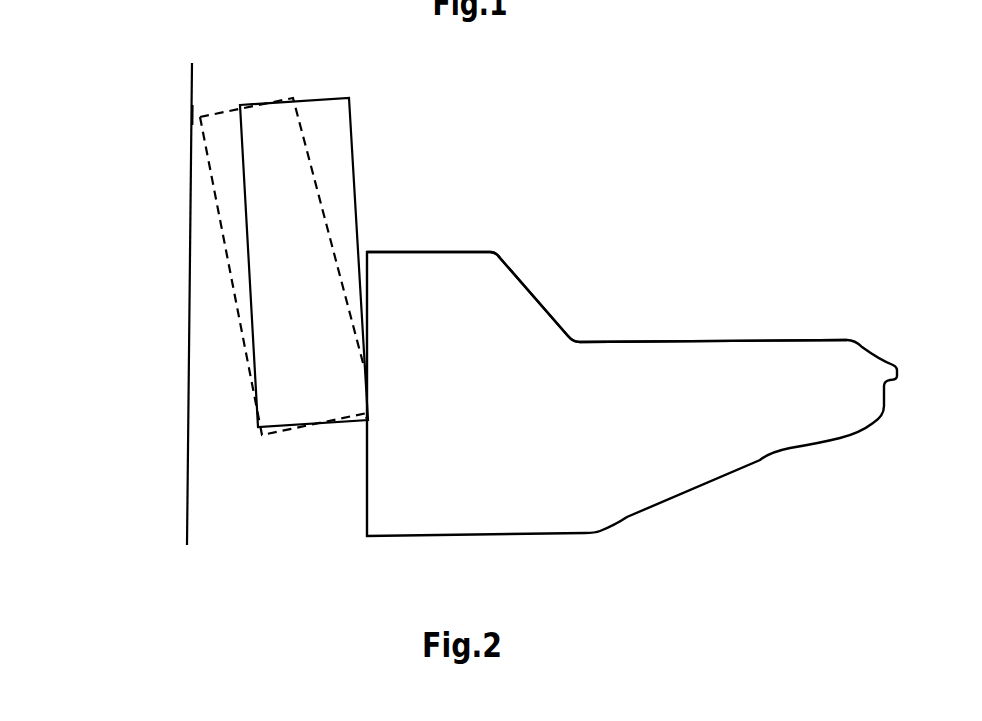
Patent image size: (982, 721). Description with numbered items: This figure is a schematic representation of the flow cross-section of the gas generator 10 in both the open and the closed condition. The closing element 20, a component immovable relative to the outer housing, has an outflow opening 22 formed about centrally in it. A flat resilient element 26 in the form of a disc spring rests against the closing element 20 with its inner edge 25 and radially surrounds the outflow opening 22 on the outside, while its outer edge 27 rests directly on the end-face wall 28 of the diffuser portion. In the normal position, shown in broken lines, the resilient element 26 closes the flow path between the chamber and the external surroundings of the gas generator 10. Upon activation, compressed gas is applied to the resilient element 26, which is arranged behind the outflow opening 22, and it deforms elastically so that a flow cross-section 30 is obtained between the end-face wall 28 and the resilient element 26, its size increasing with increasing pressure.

The gas generator 10 is at (738, 148).
The closing element 20 is at (502, 297).
The outflow opening 22 is at (465, 583).
The inner edge 25 is at (368, 420).
The resilient element 26 is at (287, 145).
The outer edge 27 is at (195, 120).
The end-face wall 28 is at (187, 357).
The flow cross-section 30 is at (216, 97).